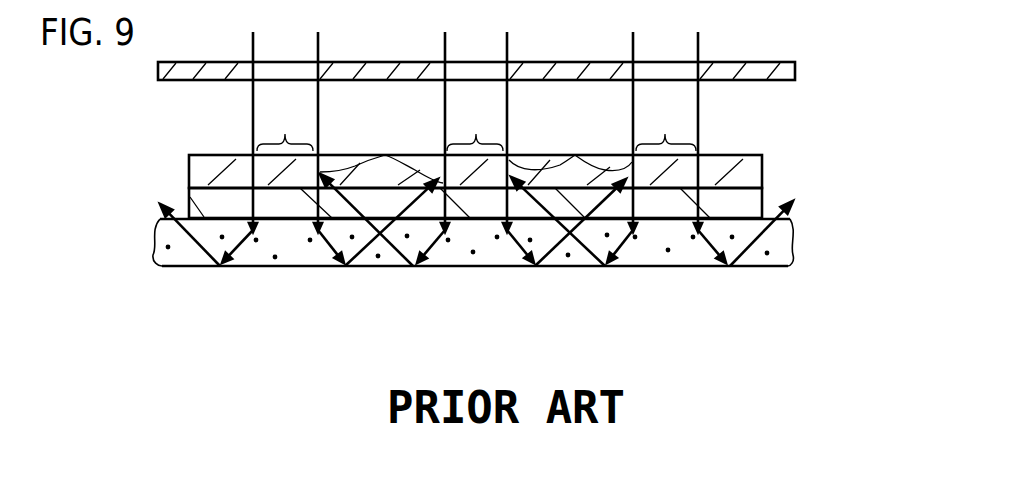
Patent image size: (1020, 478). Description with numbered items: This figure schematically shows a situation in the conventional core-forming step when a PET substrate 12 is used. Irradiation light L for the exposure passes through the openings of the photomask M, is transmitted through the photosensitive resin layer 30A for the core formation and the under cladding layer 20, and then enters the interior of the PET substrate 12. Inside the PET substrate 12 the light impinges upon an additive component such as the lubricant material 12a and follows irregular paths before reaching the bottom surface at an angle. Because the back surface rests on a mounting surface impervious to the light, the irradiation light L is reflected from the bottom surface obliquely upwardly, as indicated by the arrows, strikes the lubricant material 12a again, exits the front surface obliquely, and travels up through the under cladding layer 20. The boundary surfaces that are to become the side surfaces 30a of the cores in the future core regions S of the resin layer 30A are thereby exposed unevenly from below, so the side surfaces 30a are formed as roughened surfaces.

The irradiation light L is at (508, 47).
The photomask M is at (795, 66).
The photosensitive resin layer for the core formation 30A is at (745, 172).
The side surfaces of the cores 30a is at (390, 155).
The under cladding layer 20 is at (745, 203).
The PET substrate 12 is at (795, 235).
The lubricant material 12a is at (275, 257).
The future core regions S is at (476, 124).